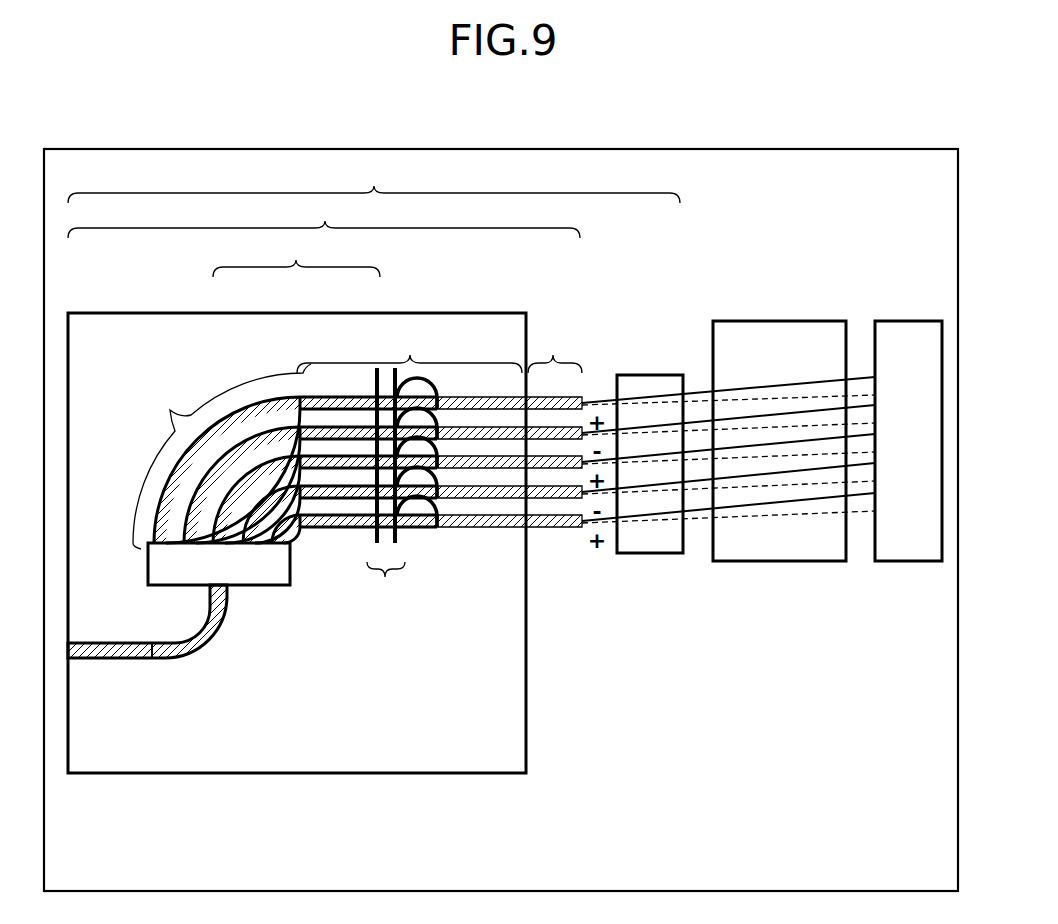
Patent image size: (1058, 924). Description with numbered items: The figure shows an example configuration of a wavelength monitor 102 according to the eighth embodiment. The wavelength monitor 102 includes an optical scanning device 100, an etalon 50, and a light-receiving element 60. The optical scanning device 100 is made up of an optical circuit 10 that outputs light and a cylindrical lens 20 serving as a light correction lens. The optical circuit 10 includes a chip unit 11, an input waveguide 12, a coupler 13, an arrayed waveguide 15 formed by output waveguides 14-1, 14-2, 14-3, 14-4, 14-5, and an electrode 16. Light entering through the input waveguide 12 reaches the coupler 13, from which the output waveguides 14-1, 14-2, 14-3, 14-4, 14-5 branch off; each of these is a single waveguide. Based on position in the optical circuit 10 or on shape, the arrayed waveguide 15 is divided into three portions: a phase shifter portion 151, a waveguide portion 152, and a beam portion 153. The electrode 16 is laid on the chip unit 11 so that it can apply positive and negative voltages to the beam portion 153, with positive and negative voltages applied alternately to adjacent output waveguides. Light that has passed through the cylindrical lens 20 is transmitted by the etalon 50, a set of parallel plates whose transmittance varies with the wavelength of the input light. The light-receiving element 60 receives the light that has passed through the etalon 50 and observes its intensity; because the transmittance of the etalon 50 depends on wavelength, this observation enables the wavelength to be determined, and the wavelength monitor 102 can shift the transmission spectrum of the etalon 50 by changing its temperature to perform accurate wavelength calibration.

The wavelength monitor 102 is at (880, 131).
The optical scanning device 100 is at (374, 182).
The optical circuit 10 is at (324, 217).
The chip unit 11 is at (495, 773).
The input waveguide 12 is at (125, 658).
The coupler 13 is at (250, 585).
The output waveguide 14-1 is at (358, 527).
The output waveguide 14-2 is at (348, 498).
The output waveguide 14-3 is at (340, 468).
The output waveguide 14-4 is at (325, 439).
The output waveguide 14-5 is at (312, 409).
The arrayed waveguide 15 is at (296, 255).
The phase shifter portion 151 is at (172, 408).
The waveguide portion 152 is at (410, 355).
The beam portion 153 is at (553, 355).
The electrode 16 is at (385, 577).
The cylindrical lens 20 is at (652, 553).
The etalon 50 is at (782, 561).
The light-receiving element 60 is at (912, 561).